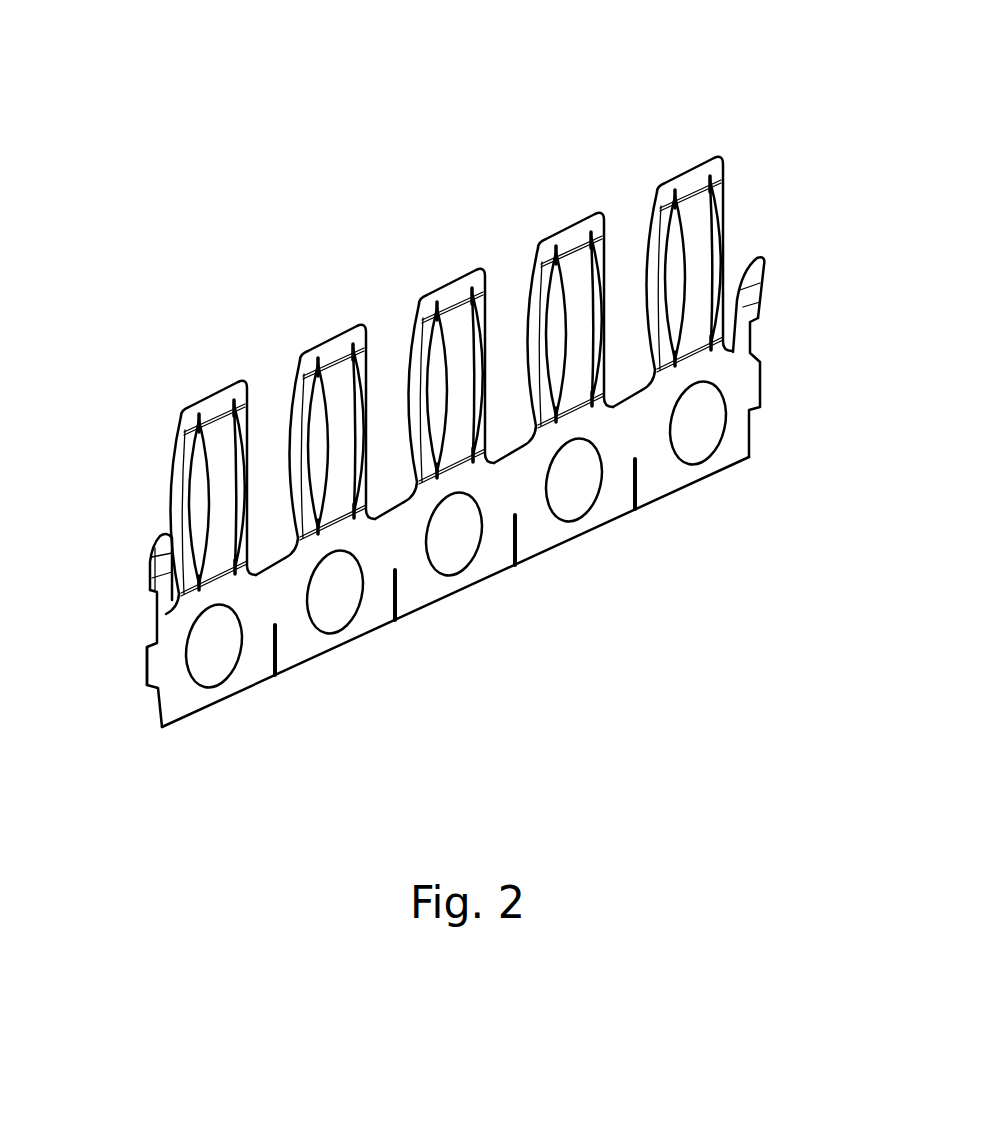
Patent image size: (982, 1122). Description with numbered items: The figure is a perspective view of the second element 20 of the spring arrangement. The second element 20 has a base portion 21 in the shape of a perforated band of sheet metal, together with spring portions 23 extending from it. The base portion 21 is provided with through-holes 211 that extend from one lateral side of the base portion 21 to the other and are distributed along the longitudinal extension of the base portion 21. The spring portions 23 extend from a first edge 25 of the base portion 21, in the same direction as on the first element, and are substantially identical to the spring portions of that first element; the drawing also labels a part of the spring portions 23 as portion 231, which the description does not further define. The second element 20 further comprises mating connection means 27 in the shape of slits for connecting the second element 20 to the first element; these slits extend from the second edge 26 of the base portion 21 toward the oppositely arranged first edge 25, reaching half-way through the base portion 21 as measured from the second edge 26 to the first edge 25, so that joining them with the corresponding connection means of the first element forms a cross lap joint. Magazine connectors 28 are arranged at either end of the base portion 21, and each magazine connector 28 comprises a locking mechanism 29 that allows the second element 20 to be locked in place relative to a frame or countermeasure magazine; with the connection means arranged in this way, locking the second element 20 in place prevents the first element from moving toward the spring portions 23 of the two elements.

The second element 20 is at (243, 248).
The base portion 21 is at (653, 460).
The through-holes 211 is at (327, 593).
The spring portions 23 is at (663, 182).
The twisted web portion 231 is at (732, 188).
The first edge 25 is at (373, 405).
The second edge 26 is at (430, 607).
The mating connection means 27 is at (520, 540).
The magazine connectors 28 is at (155, 652).
The locking mechanism 29 is at (150, 560).